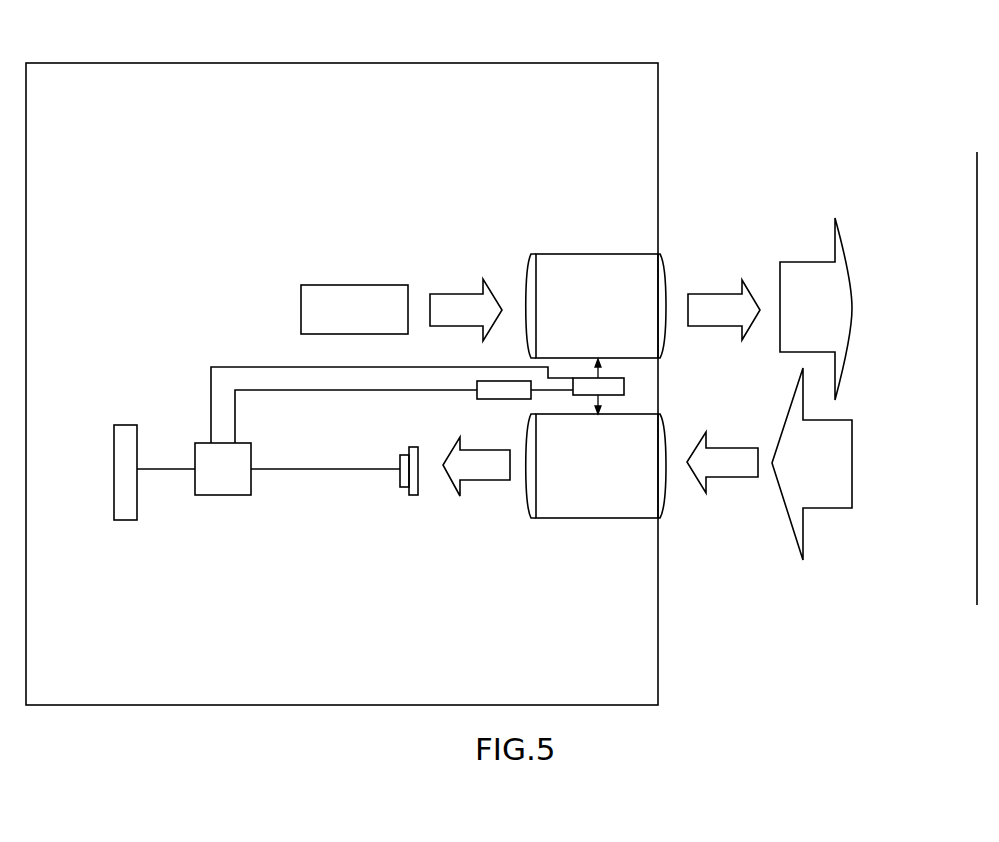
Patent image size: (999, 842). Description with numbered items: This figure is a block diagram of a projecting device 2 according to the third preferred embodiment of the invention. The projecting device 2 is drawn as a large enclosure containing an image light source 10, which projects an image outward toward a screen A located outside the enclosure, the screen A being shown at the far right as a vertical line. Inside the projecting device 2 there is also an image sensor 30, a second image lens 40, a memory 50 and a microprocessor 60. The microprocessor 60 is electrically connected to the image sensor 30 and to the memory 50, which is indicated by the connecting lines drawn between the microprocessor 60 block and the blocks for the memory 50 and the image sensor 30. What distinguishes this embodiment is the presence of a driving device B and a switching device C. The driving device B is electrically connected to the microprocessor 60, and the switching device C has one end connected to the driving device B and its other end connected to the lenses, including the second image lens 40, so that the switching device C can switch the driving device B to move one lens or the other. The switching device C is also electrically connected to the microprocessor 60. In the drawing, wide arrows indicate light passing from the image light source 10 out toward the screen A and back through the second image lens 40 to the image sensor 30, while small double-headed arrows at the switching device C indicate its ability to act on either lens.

The projecting device 2 is at (678, 68).
The image light source 10 is at (332, 285).
The image sensor 30 is at (411, 495).
The second image lens 40 is at (548, 518).
The memory 50 is at (132, 425).
The microprocessor 60 is at (221, 495).
The screen A is at (977, 152).
The driving device B is at (500, 400).
The switching device C is at (624, 386).